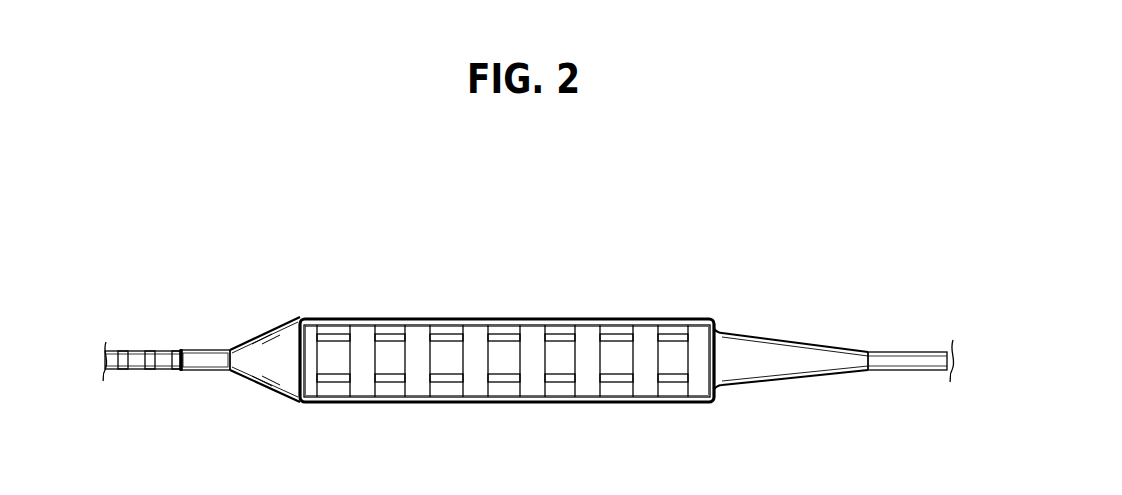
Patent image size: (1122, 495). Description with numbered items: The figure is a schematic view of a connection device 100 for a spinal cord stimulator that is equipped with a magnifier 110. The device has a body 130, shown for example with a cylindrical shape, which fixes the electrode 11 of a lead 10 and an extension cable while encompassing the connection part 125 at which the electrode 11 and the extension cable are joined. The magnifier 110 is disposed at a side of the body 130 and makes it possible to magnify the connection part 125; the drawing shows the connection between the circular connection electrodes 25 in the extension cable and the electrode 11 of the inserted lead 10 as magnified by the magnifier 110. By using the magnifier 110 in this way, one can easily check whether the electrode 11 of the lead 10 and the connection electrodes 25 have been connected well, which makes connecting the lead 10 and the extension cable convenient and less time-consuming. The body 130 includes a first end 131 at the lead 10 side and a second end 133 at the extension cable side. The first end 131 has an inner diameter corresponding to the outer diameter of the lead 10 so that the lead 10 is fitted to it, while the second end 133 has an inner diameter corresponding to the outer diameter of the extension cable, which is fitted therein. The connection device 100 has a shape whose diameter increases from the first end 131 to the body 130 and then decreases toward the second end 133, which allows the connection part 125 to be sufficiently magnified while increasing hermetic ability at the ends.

The connection device 100 is at (228, 220).
The lead 10 is at (162, 359).
The electrode 11 is at (124, 351).
The first end 131 is at (216, 362).
The body 130 is at (333, 319).
The connection part 125 is at (513, 330).
The magnifier 110 is at (447, 327).
The connection electrodes 25 is at (477, 388).
The second end 133 is at (738, 333).